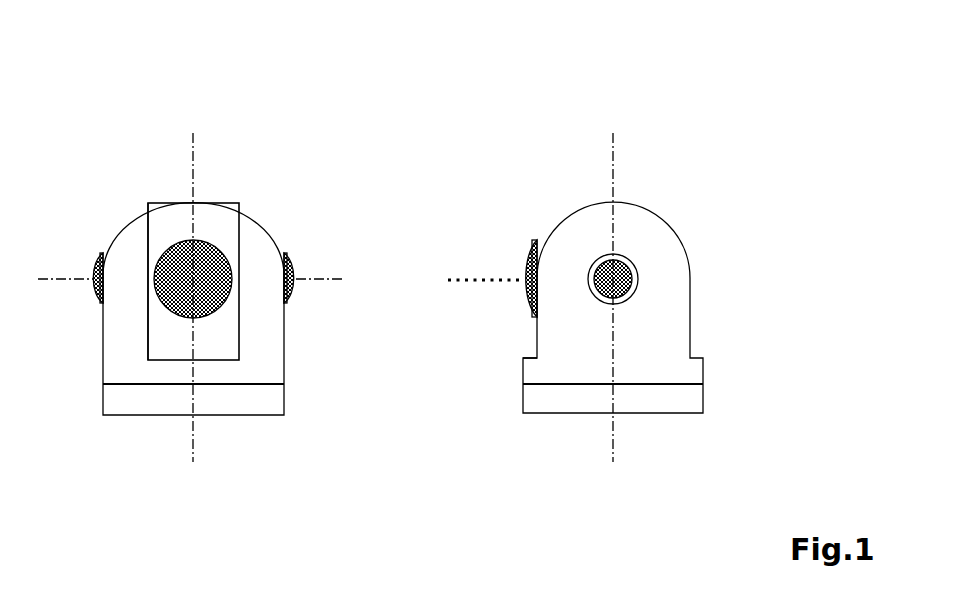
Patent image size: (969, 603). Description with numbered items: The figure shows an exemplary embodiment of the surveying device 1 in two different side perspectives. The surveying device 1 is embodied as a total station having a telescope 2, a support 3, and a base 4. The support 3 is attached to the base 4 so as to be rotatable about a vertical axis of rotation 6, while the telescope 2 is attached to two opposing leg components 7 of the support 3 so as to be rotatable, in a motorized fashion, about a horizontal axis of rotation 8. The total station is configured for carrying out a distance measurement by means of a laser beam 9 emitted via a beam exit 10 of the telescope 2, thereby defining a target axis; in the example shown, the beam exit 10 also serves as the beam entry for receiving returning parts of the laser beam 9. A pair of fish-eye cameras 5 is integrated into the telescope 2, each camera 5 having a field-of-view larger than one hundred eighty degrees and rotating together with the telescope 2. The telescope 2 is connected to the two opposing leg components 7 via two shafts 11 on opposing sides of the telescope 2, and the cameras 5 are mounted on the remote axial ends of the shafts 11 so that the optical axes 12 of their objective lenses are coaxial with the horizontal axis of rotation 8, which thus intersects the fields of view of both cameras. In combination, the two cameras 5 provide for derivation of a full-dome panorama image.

The surveying device 1 is at (464, 146).
The telescope 2 is at (403, 327).
The support 3 is at (464, 187).
The base 4 is at (445, 437).
The fish-eye camera 5 is at (453, 297).
The vertical axis of rotation 6 is at (417, 239).
The leg component 7 is at (368, 237).
The horizontal axis of rotation 8 is at (139, 280).
The laser beam 9 is at (511, 354).
The beam exit 10 is at (387, 384).
The shaft 11 is at (460, 305).
The optical axis 12 is at (94, 280).